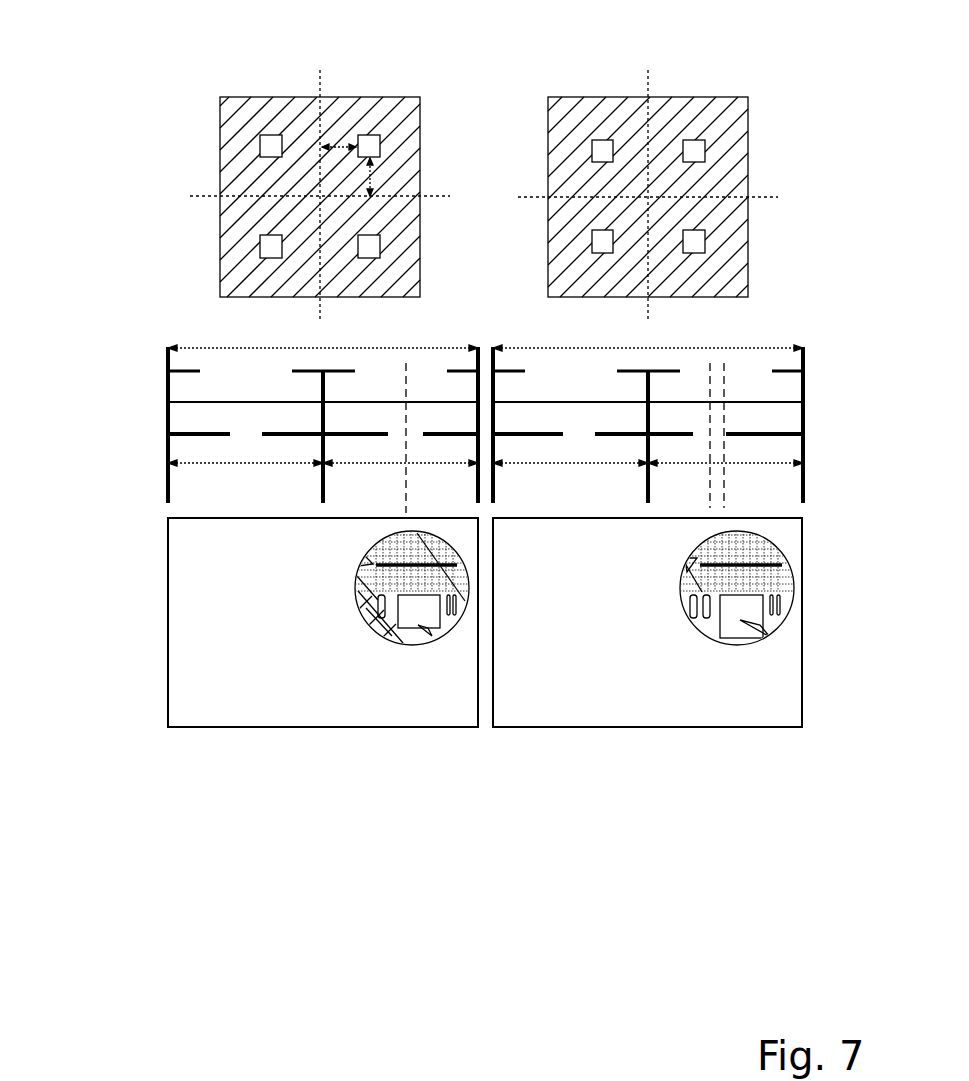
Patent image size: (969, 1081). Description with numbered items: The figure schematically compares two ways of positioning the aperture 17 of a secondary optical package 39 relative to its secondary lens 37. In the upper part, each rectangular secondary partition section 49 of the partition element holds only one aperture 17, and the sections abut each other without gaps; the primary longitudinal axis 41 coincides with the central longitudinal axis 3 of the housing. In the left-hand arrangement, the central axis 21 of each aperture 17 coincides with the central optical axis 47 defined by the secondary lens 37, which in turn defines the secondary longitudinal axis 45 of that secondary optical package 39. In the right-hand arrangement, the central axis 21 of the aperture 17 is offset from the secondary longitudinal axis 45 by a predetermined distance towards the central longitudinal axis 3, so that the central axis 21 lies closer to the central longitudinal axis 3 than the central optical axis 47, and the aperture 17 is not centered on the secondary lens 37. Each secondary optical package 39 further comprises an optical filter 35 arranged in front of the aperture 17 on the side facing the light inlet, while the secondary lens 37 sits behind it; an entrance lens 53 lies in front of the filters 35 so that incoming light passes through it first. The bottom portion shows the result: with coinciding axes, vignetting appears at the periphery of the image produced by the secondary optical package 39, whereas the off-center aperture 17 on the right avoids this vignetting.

The central longitudinal axis 3 is at (481, 195).
The aperture 17 is at (479, 318).
The central axis 21 is at (479, 487).
The optical filter 35 is at (323, 402).
The secondary lens 37 is at (385, 464).
The secondary optical package 39 is at (273, 147).
The primary longitudinal axis 41 is at (320, 197).
The secondary longitudinal axis 45 is at (479, 487).
The central optical axis 47 is at (405, 490).
The secondary partition section 49 is at (243, 122).
The entrance lens 53 is at (220, 347).